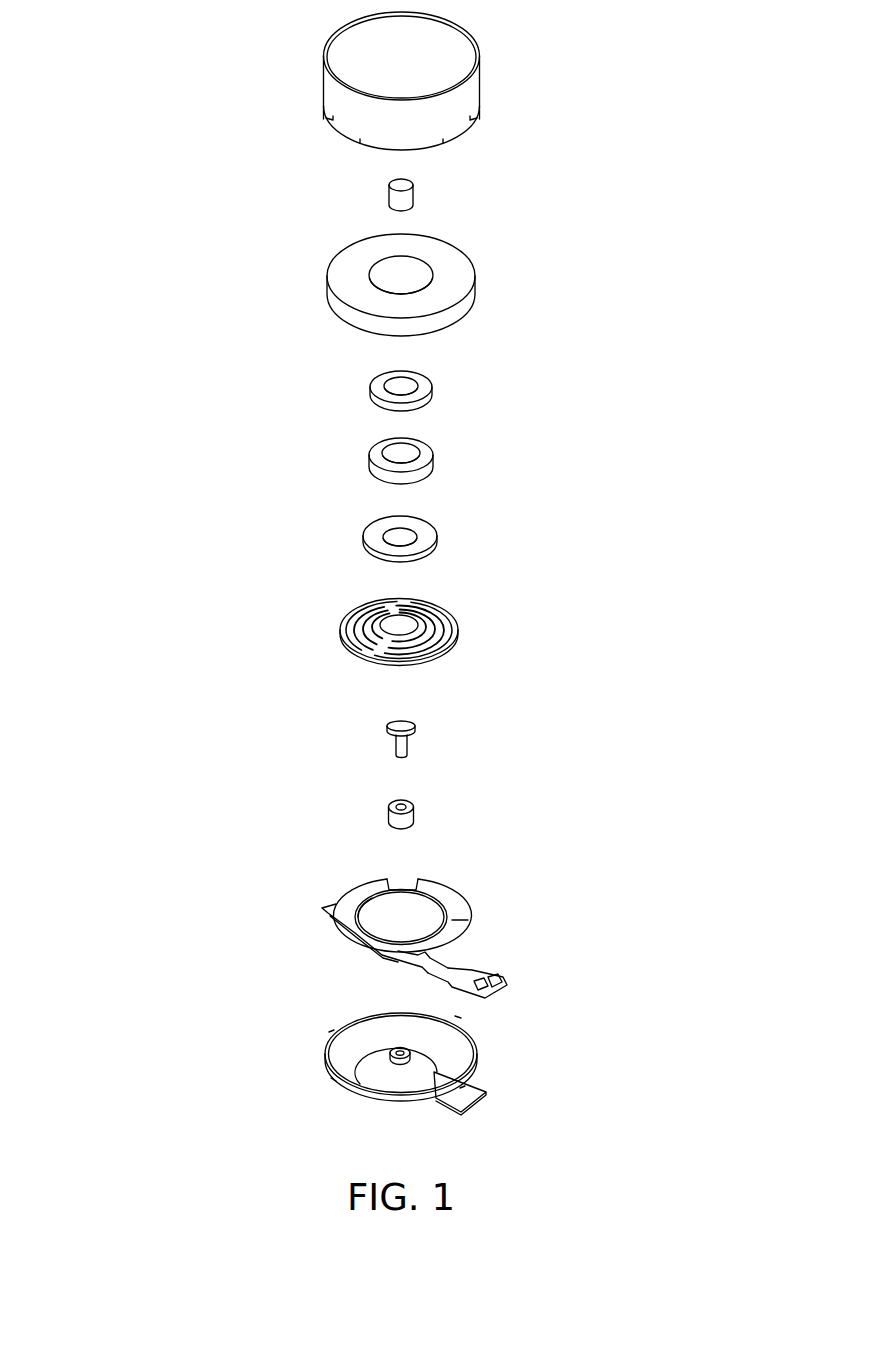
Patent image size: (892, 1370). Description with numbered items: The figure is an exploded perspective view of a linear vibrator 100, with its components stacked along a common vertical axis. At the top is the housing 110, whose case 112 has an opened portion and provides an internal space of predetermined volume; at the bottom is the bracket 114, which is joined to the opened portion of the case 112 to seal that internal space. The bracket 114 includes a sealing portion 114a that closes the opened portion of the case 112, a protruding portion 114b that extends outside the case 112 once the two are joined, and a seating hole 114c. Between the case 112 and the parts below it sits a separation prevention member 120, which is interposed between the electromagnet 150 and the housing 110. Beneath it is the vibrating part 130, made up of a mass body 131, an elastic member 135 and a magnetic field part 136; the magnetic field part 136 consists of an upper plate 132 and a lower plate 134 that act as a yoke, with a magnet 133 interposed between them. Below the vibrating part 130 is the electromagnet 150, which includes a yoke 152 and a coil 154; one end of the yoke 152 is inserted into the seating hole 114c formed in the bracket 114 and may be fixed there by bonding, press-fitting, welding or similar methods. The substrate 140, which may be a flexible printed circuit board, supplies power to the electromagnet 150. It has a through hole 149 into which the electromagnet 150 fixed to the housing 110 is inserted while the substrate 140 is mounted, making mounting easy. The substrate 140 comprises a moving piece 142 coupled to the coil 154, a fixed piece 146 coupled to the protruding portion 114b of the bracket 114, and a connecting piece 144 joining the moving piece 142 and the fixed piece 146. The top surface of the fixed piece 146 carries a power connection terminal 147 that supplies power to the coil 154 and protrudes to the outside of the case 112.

The linear vibrator 100 is at (163, 32).
The housing 110 is at (130, 89).
The case 112 is at (327, 90).
The separation prevention member 120 is at (413, 190).
The vibrating part 130 is at (620, 263).
The mass body 131 is at (465, 270).
The upper plate 132 is at (431, 388).
The magnet 133 is at (427, 453).
The lower plate 134 is at (430, 537).
The elastic member 135 is at (457, 617).
The magnetic field part 136 is at (558, 377).
The substrate 140 is at (462, 908).
The moving piece 142 is at (445, 895).
The connecting piece 144 is at (380, 963).
The fixed piece 146 is at (480, 972).
The power connection terminal 147 is at (495, 993).
The through hole 149 is at (377, 910).
The electromagnet 150 is at (560, 729).
The yoke 152 is at (413, 730).
The coil 154 is at (413, 805).
The bracket 114 is at (197, 1052).
The sealing portion 114a is at (338, 1063).
The protruding portion 114b is at (460, 1098).
The seating hole 114c is at (408, 1052).